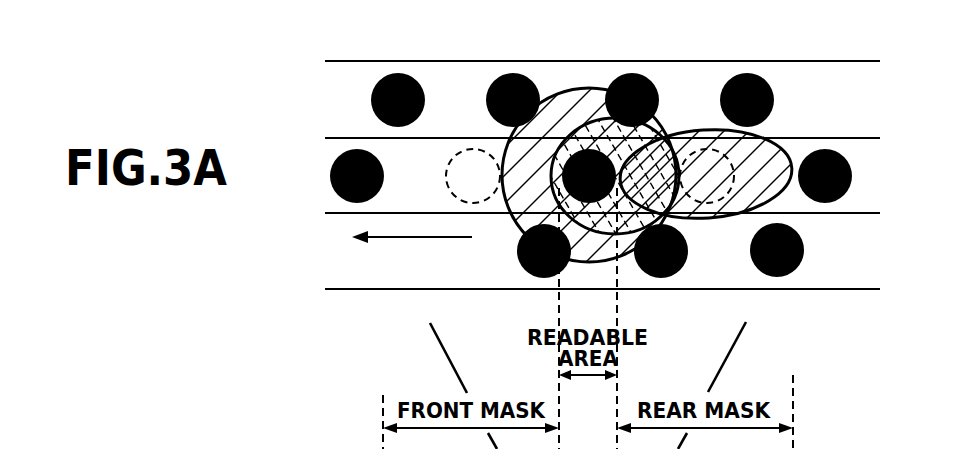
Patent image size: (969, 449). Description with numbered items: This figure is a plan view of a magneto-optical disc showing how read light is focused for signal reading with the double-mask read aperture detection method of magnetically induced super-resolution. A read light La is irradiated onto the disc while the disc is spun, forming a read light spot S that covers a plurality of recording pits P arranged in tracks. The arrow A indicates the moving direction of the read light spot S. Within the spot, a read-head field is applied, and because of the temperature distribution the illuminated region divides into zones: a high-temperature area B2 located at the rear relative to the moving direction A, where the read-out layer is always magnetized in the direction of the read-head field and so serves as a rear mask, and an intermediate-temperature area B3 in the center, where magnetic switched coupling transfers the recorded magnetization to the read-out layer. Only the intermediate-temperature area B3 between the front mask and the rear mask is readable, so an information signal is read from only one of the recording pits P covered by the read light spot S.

The read light spot S is at (568, 90).
The intermediate-temperature area B3 is at (598, 124).
The high-temperature area B2 is at (770, 150).
The recording pit P is at (804, 244).
The moving direction of the read light spot A is at (406, 238).
The read light La is at (729, 352).